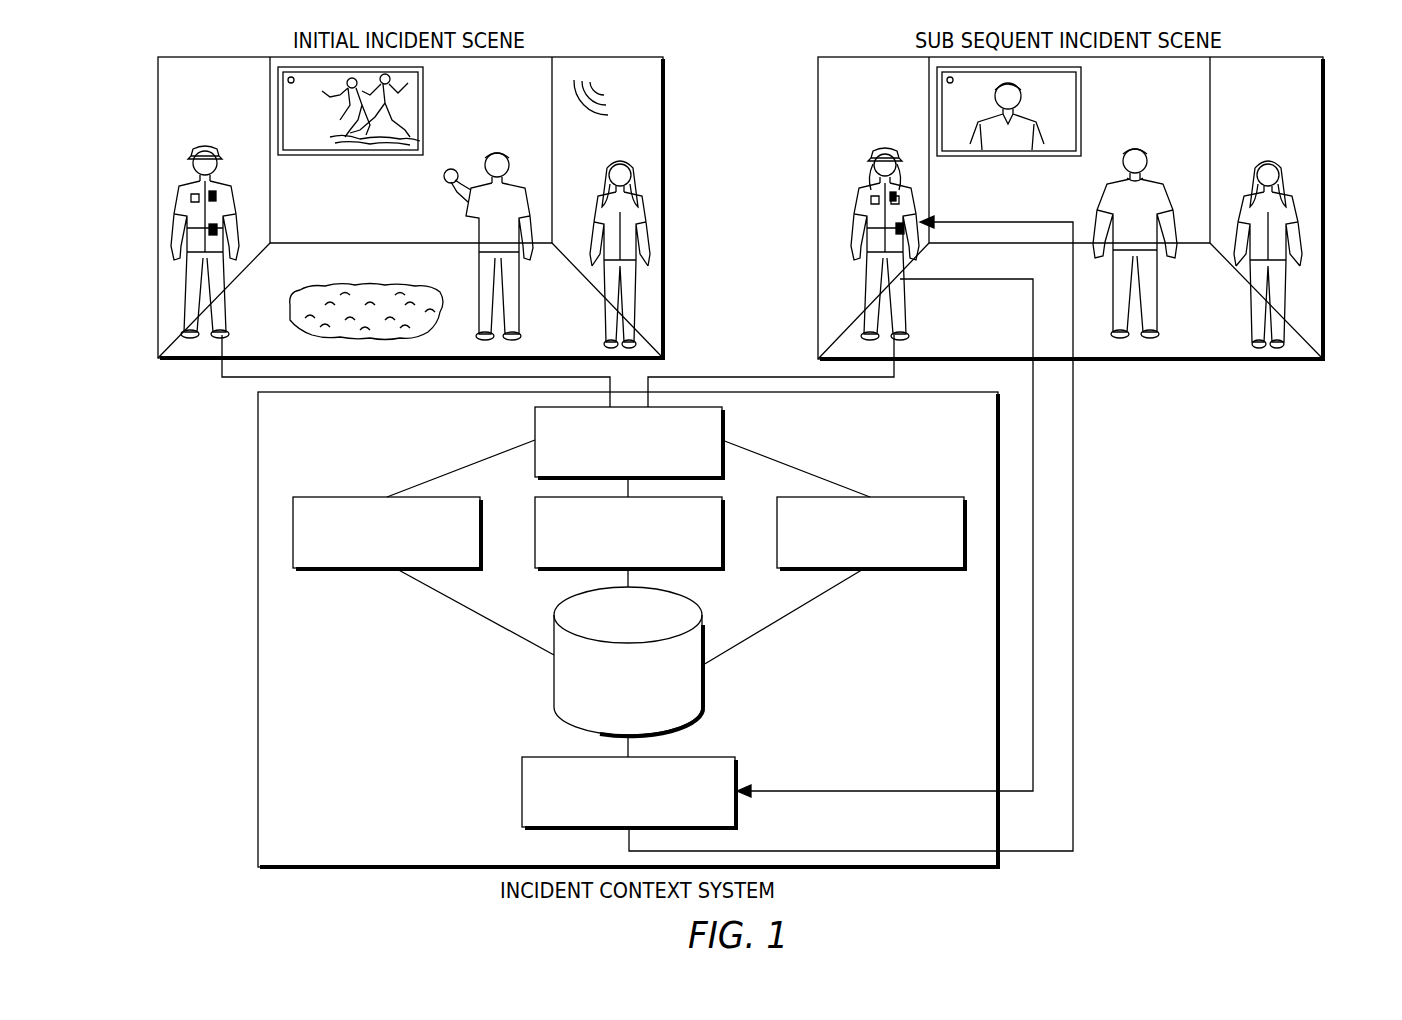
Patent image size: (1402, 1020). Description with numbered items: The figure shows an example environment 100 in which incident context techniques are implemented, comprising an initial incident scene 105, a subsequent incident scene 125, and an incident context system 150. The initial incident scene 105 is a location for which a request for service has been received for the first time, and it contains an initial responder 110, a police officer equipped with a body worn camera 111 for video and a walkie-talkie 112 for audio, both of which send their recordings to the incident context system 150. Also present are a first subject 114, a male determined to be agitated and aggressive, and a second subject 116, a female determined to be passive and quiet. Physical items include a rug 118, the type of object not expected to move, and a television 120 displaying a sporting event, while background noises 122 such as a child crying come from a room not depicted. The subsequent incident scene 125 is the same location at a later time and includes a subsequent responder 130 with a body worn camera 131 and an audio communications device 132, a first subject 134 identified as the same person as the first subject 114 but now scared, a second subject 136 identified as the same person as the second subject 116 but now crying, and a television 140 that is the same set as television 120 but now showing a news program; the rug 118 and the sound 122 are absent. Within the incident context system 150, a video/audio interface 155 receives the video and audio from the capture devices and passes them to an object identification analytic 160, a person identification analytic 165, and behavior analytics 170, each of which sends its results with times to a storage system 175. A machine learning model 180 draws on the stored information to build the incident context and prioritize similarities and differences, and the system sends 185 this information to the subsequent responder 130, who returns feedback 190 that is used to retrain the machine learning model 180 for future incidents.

The environment 100 is at (106, 54).
The initial incident scene 105 is at (668, 145).
The initial responder 110 is at (180, 190).
The body worn camera 111 is at (218, 196).
The walkie-talkie 112 is at (220, 230).
The first subject 114 is at (448, 180).
The second subject 116 is at (620, 162).
The rug 118 is at (388, 285).
The television 120 is at (425, 100).
The background noises 122 is at (604, 92).
The subsequent incident scene 125 is at (1325, 214).
The subsequent responder 130 is at (858, 205).
The body worn camera 131 is at (898, 192).
The audio communications device 132 is at (905, 229).
The first subject 134 is at (1098, 186).
The second subject 136 is at (1268, 162).
The television 140 is at (1083, 100).
The incident context system 150 is at (258, 655).
The video/audio interface 155 is at (724, 432).
The object identification analytic 160 is at (342, 497).
The person identification analytic 165 is at (557, 570).
The behavior analytics 170 is at (904, 497).
The storage system 175 is at (650, 700).
The machine learning model 180 is at (522, 790).
The send 185 is at (1074, 432).
The feedback 190 is at (1034, 490).